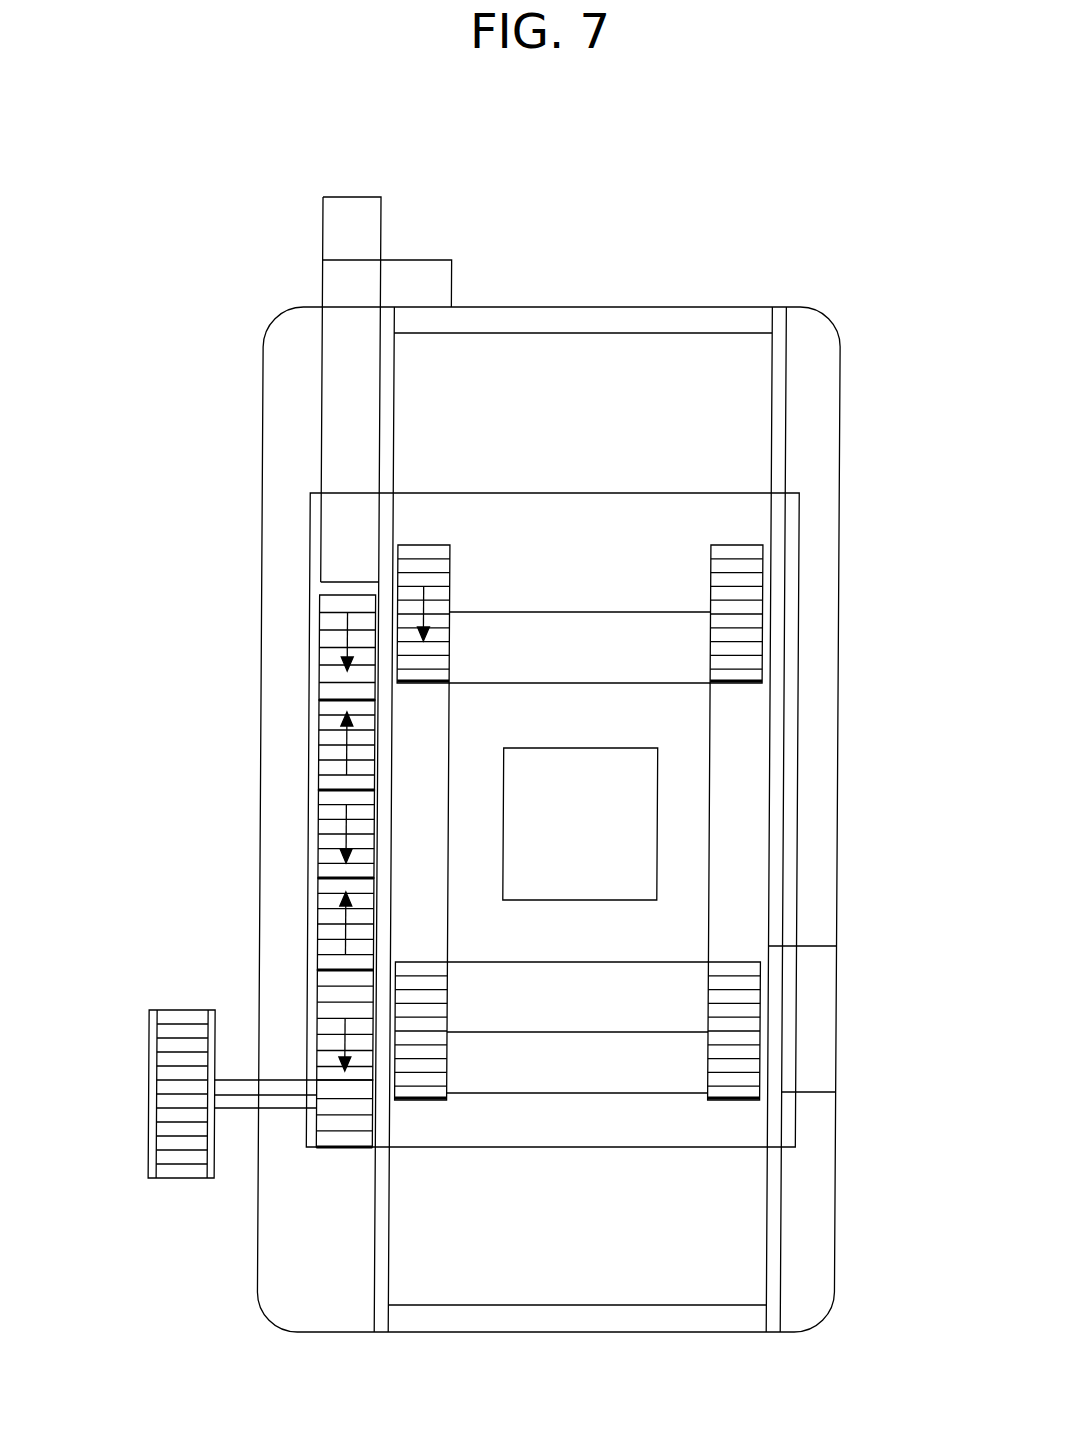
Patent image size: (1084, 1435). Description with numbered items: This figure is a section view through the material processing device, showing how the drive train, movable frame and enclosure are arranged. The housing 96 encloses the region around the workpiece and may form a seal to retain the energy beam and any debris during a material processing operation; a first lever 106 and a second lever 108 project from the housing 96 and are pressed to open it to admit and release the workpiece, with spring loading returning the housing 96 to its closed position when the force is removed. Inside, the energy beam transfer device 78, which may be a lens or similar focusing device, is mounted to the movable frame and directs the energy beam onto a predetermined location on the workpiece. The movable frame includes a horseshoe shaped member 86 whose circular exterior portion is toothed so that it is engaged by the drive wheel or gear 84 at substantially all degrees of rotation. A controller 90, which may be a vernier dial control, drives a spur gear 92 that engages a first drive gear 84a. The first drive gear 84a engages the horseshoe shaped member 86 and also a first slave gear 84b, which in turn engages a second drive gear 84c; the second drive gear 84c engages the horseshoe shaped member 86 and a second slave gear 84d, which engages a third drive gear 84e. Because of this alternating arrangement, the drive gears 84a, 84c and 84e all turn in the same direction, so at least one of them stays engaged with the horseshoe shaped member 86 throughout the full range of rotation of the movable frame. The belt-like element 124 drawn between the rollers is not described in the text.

The energy beam transfer device 78 is at (640, 814).
The drive wheel or gear 84 is at (330, 548).
The first drive gear 84a is at (333, 997).
The first slave gear 84b is at (322, 893).
The second drive gear 84c is at (320, 818).
The second slave gear 84d is at (320, 703).
The third drive gear 84e is at (322, 640).
The horseshoe shaped member 86 is at (428, 552).
The controller 90 is at (182, 1167).
The spur gear 92 is at (340, 1140).
The housing 96 is at (818, 303).
The first lever 106 is at (343, 197).
The second lever 108 is at (416, 260).
The transport belt 124 is at (582, 604).